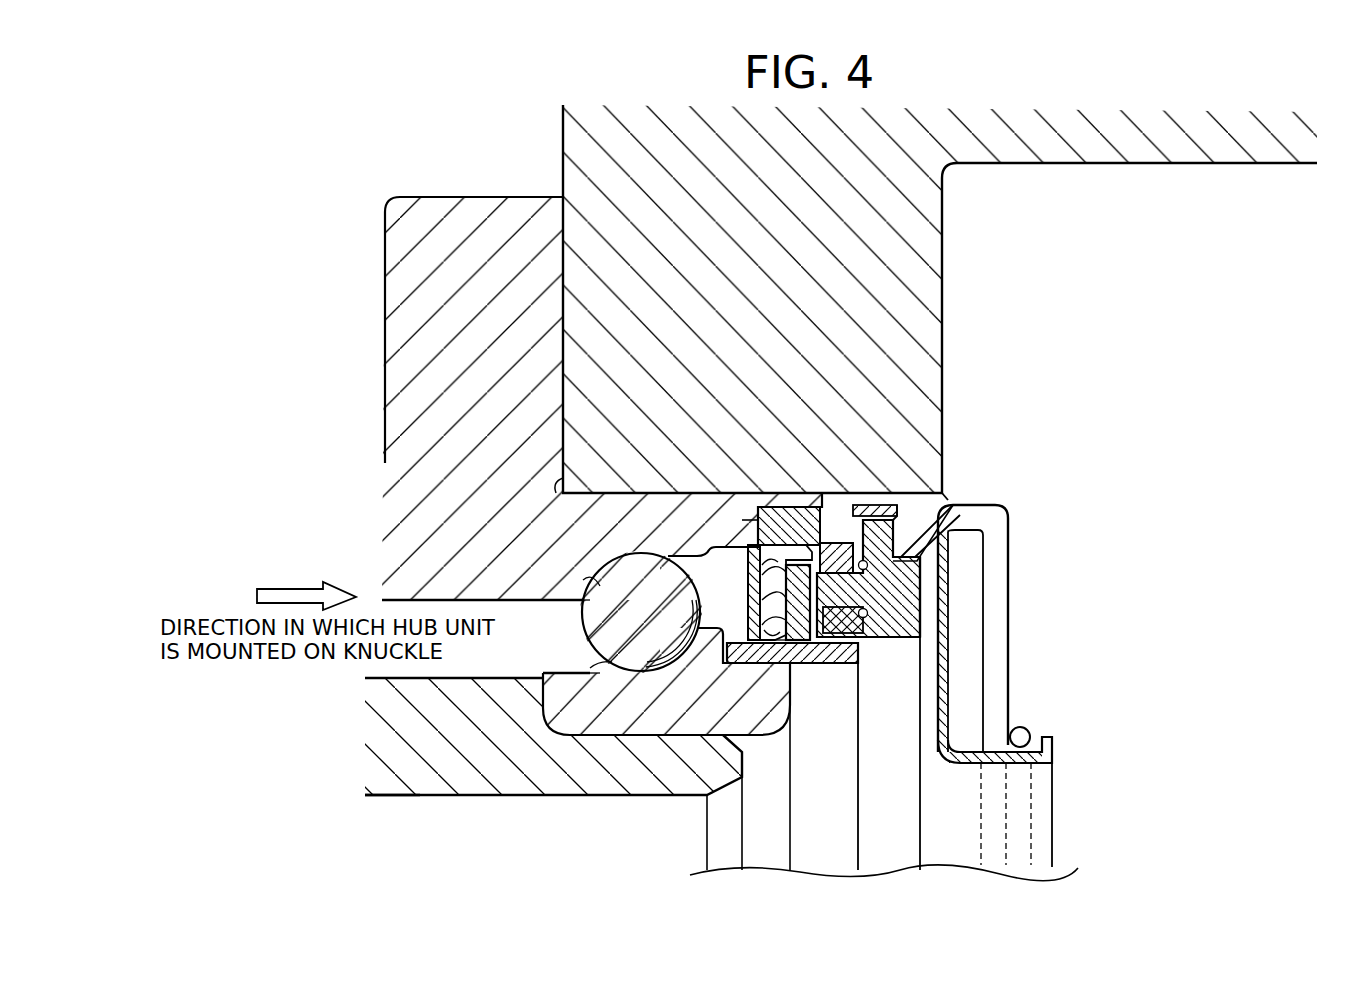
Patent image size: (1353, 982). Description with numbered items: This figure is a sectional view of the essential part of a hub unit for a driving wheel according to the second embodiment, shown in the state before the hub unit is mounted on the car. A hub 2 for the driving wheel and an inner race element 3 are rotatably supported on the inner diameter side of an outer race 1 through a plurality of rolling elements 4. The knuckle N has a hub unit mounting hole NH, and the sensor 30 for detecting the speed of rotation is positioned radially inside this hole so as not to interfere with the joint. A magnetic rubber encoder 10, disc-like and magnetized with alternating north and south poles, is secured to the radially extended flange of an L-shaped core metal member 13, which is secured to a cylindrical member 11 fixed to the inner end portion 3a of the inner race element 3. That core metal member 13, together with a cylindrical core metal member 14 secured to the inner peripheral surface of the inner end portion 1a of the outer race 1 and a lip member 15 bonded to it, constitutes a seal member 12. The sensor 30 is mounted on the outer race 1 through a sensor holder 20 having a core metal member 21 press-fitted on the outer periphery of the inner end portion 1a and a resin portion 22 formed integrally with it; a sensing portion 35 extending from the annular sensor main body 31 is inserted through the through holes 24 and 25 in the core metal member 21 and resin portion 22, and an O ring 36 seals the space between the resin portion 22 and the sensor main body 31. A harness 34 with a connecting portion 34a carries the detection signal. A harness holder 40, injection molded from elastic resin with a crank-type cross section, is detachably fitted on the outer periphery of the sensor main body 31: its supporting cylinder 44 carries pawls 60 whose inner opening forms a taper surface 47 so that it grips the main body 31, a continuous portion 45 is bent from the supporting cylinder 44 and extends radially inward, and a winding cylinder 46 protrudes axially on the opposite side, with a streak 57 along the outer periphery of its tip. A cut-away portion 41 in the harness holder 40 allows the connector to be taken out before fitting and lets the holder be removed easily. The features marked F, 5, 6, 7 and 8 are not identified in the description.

The knuckle N is at (948, 297).
The flange of hub F is at (398, 347).
The outer race 1 is at (418, 535).
The inner end portion of the outer race 1a is at (714, 545).
The hub for a driving wheel 2 is at (415, 740).
The inner race element 3 is at (607, 748).
The inner end portion of the inner race element 3a is at (766, 725).
The rolling elements 4 is at (597, 628).
The outer ring raceway surface 5 is at (586, 605).
The inner ring end face 6 is at (681, 797).
The inner raceway 7 is at (602, 650).
The shaft end surface 8 is at (418, 797).
The magnetic rubber encoder 10 is at (806, 668).
The cylindrical member 11 is at (951, 670).
The seal member 12 is at (740, 589).
The core metal member 13 is at (770, 648).
The cylindrical core metal member 14 is at (692, 556).
The lip member 15 is at (702, 560).
The sensor holder 20 is at (715, 515).
The core metal member 21 is at (760, 540).
The resin portion 22 is at (790, 560).
The through hole 24 is at (855, 556).
The through hole 25 is at (949, 500).
The sensor 30 is at (928, 633).
The sensor main body 31 is at (921, 598).
The harness 34 is at (1017, 671).
The connecting portion 34a is at (963, 503).
The sensing portion 35 is at (862, 663).
The O ring 36 is at (860, 505).
The harness holder 40 is at (1022, 728).
The cut-away portion 41 is at (947, 521).
The supporting cylinder 44 is at (955, 505).
The continuous portion 45 is at (865, 590).
The winding cylinder 46 is at (1025, 765).
The taper surface 47 is at (890, 505).
The streak 57 is at (1053, 745).
The pawl 60 is at (872, 500).
The hub unit mounting hole NH is at (750, 520).